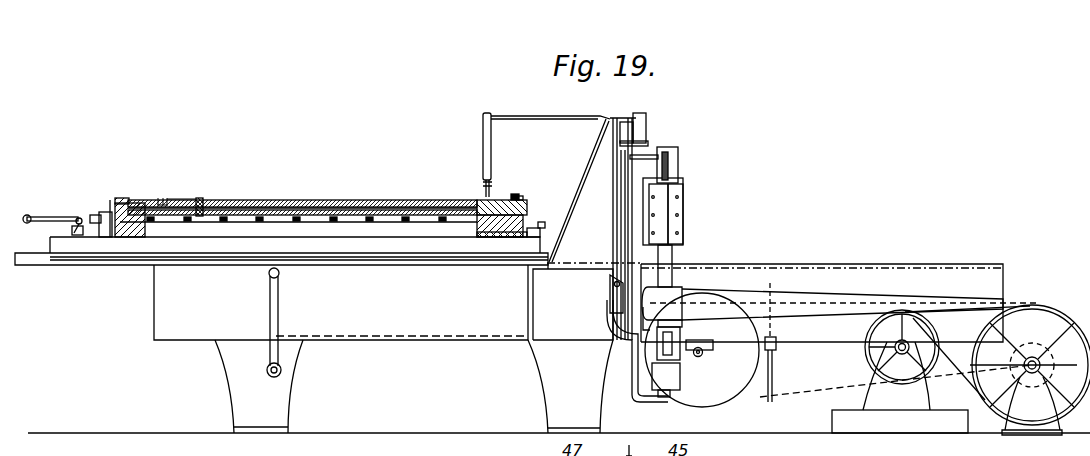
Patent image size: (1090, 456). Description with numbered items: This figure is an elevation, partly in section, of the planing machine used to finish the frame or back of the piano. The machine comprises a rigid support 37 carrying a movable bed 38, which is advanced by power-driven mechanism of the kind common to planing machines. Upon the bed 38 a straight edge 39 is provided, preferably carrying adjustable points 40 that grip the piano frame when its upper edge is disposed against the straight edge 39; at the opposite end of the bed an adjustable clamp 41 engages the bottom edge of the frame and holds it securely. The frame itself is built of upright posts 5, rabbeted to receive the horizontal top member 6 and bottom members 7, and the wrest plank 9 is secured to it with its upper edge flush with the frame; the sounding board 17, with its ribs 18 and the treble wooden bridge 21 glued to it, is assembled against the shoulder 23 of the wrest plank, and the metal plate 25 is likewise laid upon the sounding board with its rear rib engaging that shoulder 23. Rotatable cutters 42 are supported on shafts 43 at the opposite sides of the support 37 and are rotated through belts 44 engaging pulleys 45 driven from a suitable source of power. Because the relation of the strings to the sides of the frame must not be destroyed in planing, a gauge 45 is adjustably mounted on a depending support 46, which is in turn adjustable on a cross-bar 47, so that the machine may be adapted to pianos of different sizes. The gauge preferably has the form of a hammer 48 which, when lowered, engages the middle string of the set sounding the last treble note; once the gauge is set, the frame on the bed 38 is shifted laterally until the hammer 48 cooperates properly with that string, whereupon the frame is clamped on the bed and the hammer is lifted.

The upright posts 5 is at (362, 228).
The horizontal top member 6 is at (500, 224).
The bottom members 7 is at (130, 240).
The wrest plank 9 is at (520, 200).
The sounding board 17 is at (352, 211).
The ribs 18 is at (224, 214).
The treble wooden bridge 21 is at (199, 200).
The shoulder of the wrest plank 23 is at (468, 211).
The metal plate 25 is at (270, 200).
The rigid support 37 is at (457, 321).
The movable bed 38 is at (303, 247).
The straight edge 39 is at (530, 227).
The adjustable points 40 is at (545, 224).
The adjustable clamp 41 is at (108, 214).
The rotatable cutters 42 is at (680, 212).
The shafts 43 is at (667, 260).
The belts 44 is at (807, 297).
The gauge 45 is at (482, 180).
The depending support 46 is at (491, 147).
The cross-bar 47 is at (643, 135).
The hammer 48 is at (489, 191).